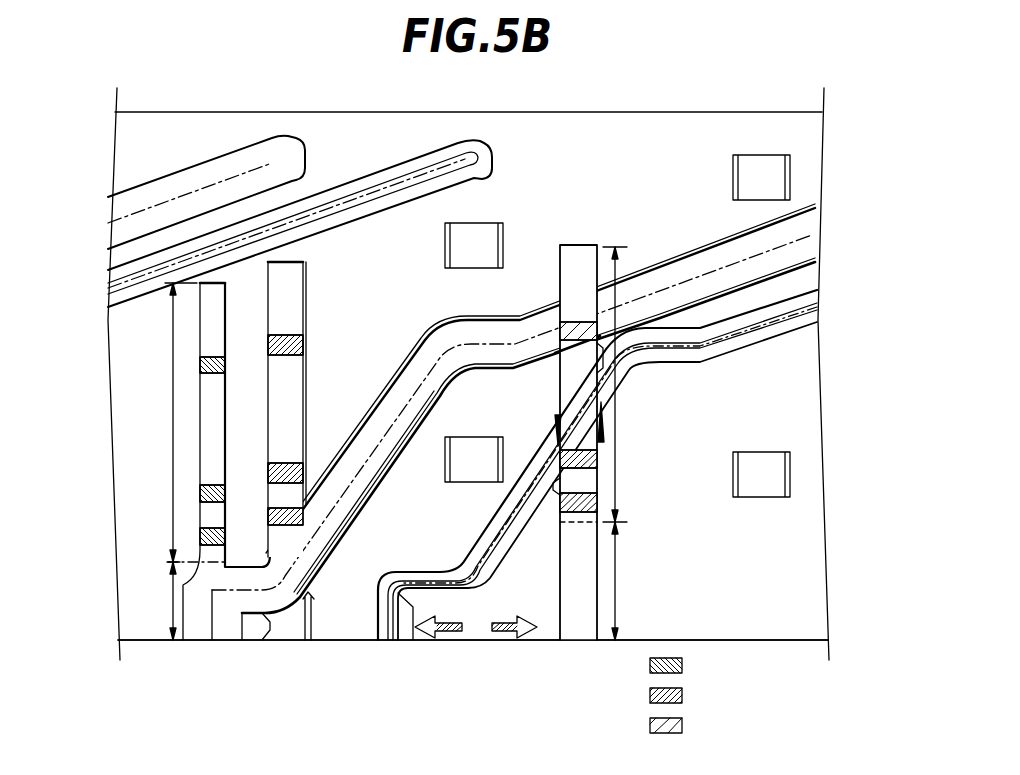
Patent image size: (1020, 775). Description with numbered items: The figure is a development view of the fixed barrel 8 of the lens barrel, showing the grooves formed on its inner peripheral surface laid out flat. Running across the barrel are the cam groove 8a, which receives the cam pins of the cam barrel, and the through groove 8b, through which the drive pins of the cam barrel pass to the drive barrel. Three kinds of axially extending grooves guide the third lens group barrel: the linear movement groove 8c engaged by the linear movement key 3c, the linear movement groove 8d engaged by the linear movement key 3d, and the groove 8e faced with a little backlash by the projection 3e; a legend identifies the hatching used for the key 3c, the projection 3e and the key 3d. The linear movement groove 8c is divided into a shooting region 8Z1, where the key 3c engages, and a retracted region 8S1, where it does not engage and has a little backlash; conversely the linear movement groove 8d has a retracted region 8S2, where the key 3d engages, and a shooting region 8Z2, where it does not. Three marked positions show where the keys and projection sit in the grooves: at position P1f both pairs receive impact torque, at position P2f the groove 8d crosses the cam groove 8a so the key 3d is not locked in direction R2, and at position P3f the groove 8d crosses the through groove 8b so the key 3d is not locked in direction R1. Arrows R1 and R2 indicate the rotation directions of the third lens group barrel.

The fixed barrel 8 is at (800, 592).
The cam groove 8a is at (687, 347).
The groove 8b is at (683, 277).
The linear movement groove 8c is at (215, 292).
The linear movement groove 8d is at (580, 245).
The groove 8e is at (305, 262).
The position P3f is at (200, 365).
The position P2f is at (205, 488).
The position P1f is at (205, 535).
The shooting region 8Z1 is at (162, 422).
The retracted region 8S1 is at (152, 601).
The shooting region 8Z2 is at (636, 384).
The retracted region 8S2 is at (639, 581).
The rotation direction R1 is at (514, 644).
The rotation direction R2 is at (438, 644).
The linear movement key 3c is at (685, 667).
The projection 3e is at (686, 697).
The linear movement key 3d is at (687, 727).